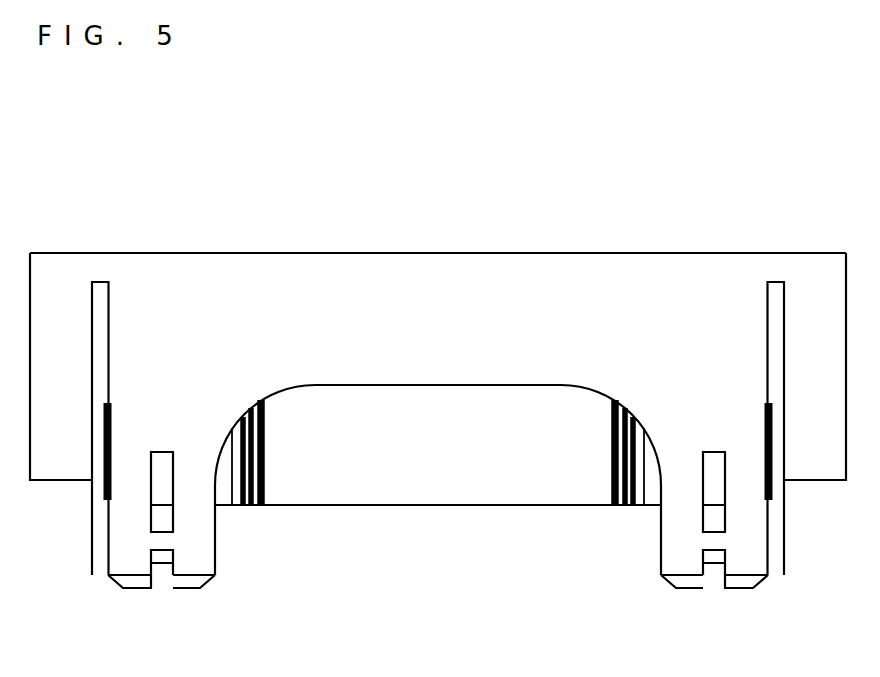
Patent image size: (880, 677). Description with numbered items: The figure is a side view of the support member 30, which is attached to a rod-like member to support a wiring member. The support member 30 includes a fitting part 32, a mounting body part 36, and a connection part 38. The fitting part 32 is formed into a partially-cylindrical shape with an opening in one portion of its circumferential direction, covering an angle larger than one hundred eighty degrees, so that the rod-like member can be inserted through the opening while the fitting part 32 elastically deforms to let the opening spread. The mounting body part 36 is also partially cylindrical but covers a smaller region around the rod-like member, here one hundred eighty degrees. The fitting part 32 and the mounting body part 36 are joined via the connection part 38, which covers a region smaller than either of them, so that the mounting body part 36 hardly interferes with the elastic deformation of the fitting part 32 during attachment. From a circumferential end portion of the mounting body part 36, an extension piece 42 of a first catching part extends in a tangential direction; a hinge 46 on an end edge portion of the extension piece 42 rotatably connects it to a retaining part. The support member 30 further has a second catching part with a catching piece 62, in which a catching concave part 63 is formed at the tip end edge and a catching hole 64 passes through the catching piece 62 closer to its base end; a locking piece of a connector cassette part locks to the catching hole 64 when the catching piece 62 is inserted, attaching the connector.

The support member 30 is at (246, 128).
The fitting part 32 is at (60, 470).
The mounting body part 36 is at (452, 265).
The connection part 38 is at (102, 272).
The extension piece 42 is at (439, 495).
The hinge 46 is at (248, 510).
The catching piece 62 is at (117, 555).
The catching concave part 63 is at (170, 565).
The catching hole 64 is at (165, 530).